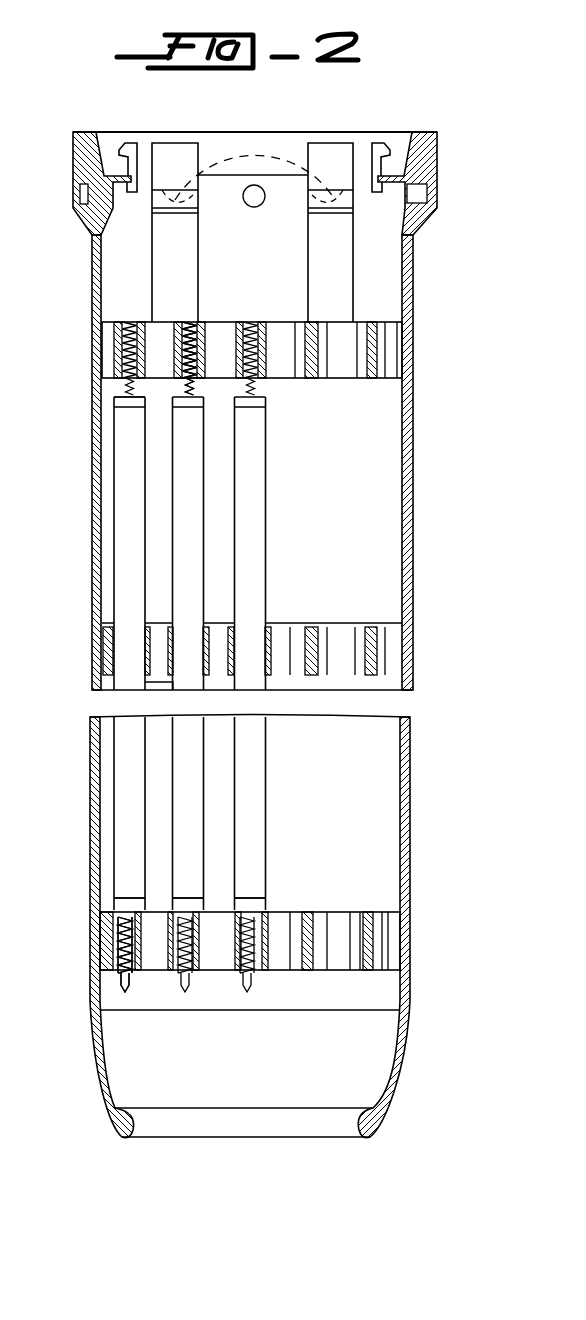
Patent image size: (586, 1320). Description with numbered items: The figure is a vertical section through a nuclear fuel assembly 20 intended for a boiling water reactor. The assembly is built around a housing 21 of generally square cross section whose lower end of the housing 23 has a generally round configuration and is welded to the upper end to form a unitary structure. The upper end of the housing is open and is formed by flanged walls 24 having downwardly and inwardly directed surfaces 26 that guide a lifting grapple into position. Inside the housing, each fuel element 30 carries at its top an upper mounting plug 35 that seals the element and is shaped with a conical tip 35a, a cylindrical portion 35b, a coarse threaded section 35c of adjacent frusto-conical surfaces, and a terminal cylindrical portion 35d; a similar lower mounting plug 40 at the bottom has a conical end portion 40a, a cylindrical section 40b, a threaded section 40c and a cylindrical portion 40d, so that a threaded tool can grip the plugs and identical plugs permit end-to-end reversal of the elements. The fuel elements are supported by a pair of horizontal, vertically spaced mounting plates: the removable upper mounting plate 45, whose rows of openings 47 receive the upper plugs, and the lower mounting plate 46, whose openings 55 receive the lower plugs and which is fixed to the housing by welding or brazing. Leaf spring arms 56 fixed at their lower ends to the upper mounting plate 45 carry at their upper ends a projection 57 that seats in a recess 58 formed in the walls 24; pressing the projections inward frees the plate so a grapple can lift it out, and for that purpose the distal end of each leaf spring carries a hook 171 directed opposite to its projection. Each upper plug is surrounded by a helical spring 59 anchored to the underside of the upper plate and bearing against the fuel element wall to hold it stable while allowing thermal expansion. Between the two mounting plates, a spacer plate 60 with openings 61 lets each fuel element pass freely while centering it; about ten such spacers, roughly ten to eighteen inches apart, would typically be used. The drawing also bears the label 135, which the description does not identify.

The nuclear fuel assembly 20 is at (58, 376).
The housing 21 is at (90, 742).
The lower end of the housing 23 is at (153, 1140).
The flanged walls 24 is at (73, 164).
The downwardly and inwardly directed surfaces 26 is at (86, 158).
The fuel element 30 is at (118, 498).
The upper mounting plug 35 is at (270, 380).
The conical tip 35a is at (250, 330).
The cylindrical portion 35b is at (200, 372).
The threaded section 35c is at (178, 370).
The cylindrical portion 35d is at (120, 388).
The lower mounting plug 40 is at (256, 926).
The conical end portion 40a is at (253, 990).
The cylindrical section 40b is at (247, 990).
The threaded section 40c is at (118, 950).
The cylindrical portion 40d is at (120, 925).
The upper mounting plate 45 is at (338, 369).
The lower mounting plate 46 is at (395, 936).
The openings 47 is at (197, 359).
The openings 55 is at (188, 927).
The leaf spring arms 56 is at (128, 244).
The projection 57 is at (79, 181).
The recesses 58 is at (78, 198).
The helical spring 59 is at (143, 393).
The spacer plate 60 is at (252, 635).
The openings 61 is at (255, 631).
The hole 135 is at (258, 206).
The hook 171 is at (133, 144).